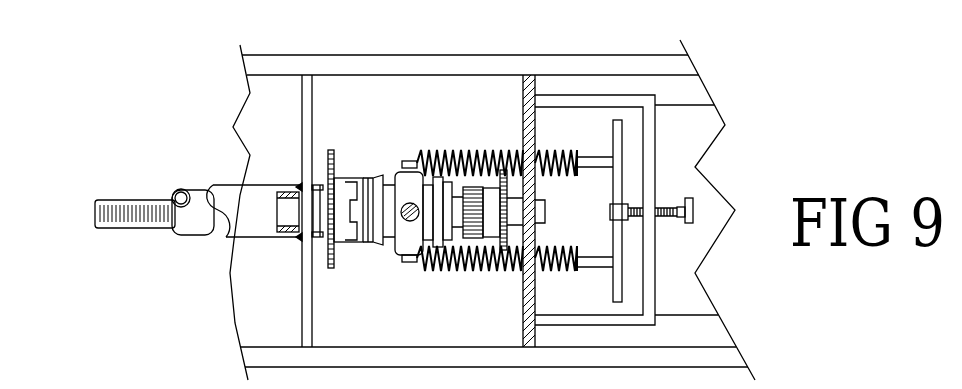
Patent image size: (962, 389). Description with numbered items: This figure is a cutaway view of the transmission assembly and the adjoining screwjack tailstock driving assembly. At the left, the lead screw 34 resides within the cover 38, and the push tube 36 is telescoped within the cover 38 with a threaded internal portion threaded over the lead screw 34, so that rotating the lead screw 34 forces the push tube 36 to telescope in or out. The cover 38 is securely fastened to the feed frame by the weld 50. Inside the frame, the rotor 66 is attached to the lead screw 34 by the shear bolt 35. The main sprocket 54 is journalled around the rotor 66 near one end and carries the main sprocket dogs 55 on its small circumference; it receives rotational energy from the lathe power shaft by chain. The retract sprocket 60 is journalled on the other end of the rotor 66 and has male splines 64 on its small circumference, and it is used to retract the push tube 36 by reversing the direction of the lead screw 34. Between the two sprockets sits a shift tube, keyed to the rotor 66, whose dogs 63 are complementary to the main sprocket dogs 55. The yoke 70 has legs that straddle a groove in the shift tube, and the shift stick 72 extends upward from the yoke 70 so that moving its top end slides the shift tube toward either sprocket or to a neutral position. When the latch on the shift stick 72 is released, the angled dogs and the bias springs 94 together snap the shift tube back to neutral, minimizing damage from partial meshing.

The lead screw 34 is at (128, 198).
The push tube 36 is at (197, 191).
The cover 38 is at (252, 197).
The weld 50 is at (298, 184).
The shear bolt 35 is at (318, 183).
The main sprocket 54 is at (333, 176).
The main sprocket dogs 55 is at (338, 242).
The shift tube dogs 63 is at (356, 242).
The shift stick 72 is at (398, 200).
The yoke 70 is at (404, 185).
The rotor 66 is at (396, 243).
The male splines 64 is at (471, 220).
The retract sprocket 60 is at (465, 151).
The bias springs 94 is at (543, 157).